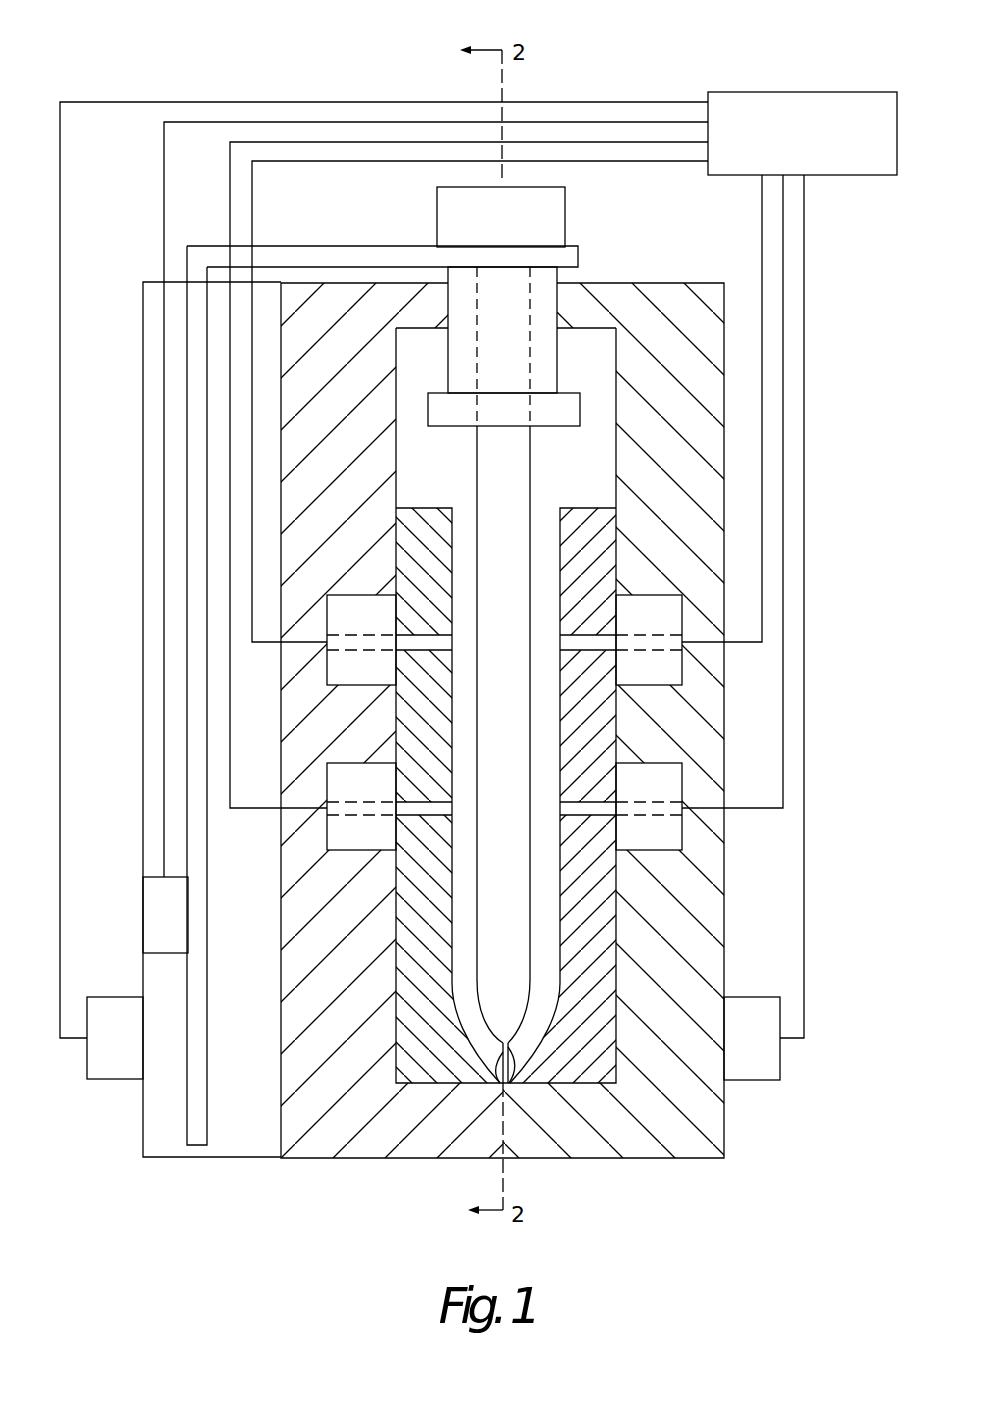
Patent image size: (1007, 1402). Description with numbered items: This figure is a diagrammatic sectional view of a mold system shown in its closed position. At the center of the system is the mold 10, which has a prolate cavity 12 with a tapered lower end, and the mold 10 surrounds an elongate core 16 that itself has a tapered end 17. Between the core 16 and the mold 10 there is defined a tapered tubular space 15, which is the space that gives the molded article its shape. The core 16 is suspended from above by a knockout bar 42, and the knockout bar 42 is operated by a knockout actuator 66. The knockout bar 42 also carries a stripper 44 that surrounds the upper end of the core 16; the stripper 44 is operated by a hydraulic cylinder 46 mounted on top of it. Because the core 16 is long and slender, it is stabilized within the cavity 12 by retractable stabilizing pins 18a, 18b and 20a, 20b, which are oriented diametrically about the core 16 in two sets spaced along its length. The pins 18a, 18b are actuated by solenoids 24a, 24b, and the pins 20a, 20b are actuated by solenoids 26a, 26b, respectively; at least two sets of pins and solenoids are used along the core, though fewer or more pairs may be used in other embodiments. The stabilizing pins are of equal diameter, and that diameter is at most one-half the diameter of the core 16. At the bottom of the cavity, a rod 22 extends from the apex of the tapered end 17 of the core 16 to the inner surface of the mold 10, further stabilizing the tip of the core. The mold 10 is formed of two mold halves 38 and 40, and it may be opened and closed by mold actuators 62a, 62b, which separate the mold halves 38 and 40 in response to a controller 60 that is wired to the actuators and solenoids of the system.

The mold 10 is at (356, 23).
The prolate cavity 12 is at (547, 950).
The tapered tubular space 15 is at (547, 727).
The elongate core 16 is at (514, 468).
The tapered end 17 is at (518, 1082).
The rod 22 is at (498, 1083).
The mold half 38 is at (412, 543).
The mold half 40 is at (574, 543).
The retractable stabilizing pin 18a is at (418, 635).
The retractable stabilizing pin 18b is at (587, 635).
The retractable stabilizing pin 20a is at (416, 802).
The retractable stabilizing pin 20b is at (589, 802).
The solenoid 24a is at (350, 595).
The solenoid 24b is at (653, 595).
The solenoid 26a is at (364, 850).
The solenoid 26b is at (661, 850).
The knockout bar 42 is at (578, 258).
The stripper 44 is at (545, 308).
The hydraulic cylinder 46 is at (513, 227).
The controller 60 is at (778, 92).
The mold actuator 62a is at (137, 1053).
The mold actuator 62b is at (774, 1054).
The knockout actuator 66 is at (182, 928).